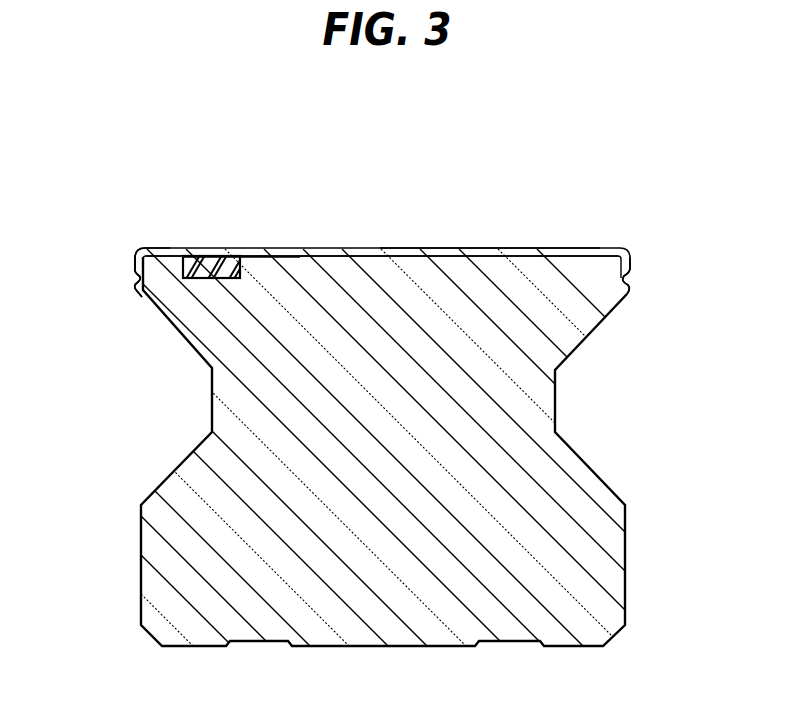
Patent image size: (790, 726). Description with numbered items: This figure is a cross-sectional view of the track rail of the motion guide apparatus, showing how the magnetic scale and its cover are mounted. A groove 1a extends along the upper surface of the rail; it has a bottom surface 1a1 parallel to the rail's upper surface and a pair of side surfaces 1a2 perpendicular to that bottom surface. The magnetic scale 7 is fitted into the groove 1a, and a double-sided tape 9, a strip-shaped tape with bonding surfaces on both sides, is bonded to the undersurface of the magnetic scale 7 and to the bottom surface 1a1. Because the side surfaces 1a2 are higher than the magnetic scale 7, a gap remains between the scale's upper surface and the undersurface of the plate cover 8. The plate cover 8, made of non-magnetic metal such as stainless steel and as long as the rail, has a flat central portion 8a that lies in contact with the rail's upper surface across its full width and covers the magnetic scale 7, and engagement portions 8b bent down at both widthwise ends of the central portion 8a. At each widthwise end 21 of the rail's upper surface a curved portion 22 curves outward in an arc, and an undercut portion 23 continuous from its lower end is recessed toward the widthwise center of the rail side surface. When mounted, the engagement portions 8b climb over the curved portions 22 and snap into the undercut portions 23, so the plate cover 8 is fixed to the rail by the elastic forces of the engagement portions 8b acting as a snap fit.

The groove 1a is at (379, 163).
The bottom surface 1a1 is at (212, 270).
The side surfaces 1a2 is at (240, 268).
The magnetic scale 7 is at (189, 256).
The plate cover 8 is at (427, 249).
The central portion 8a is at (493, 255).
The engagement portions 8b is at (634, 271).
The double-sided tape 9 is at (211, 279).
The widthwise end 21 is at (135, 248).
The curved portion 22 is at (134, 265).
The undercut portion 23 is at (134, 286).